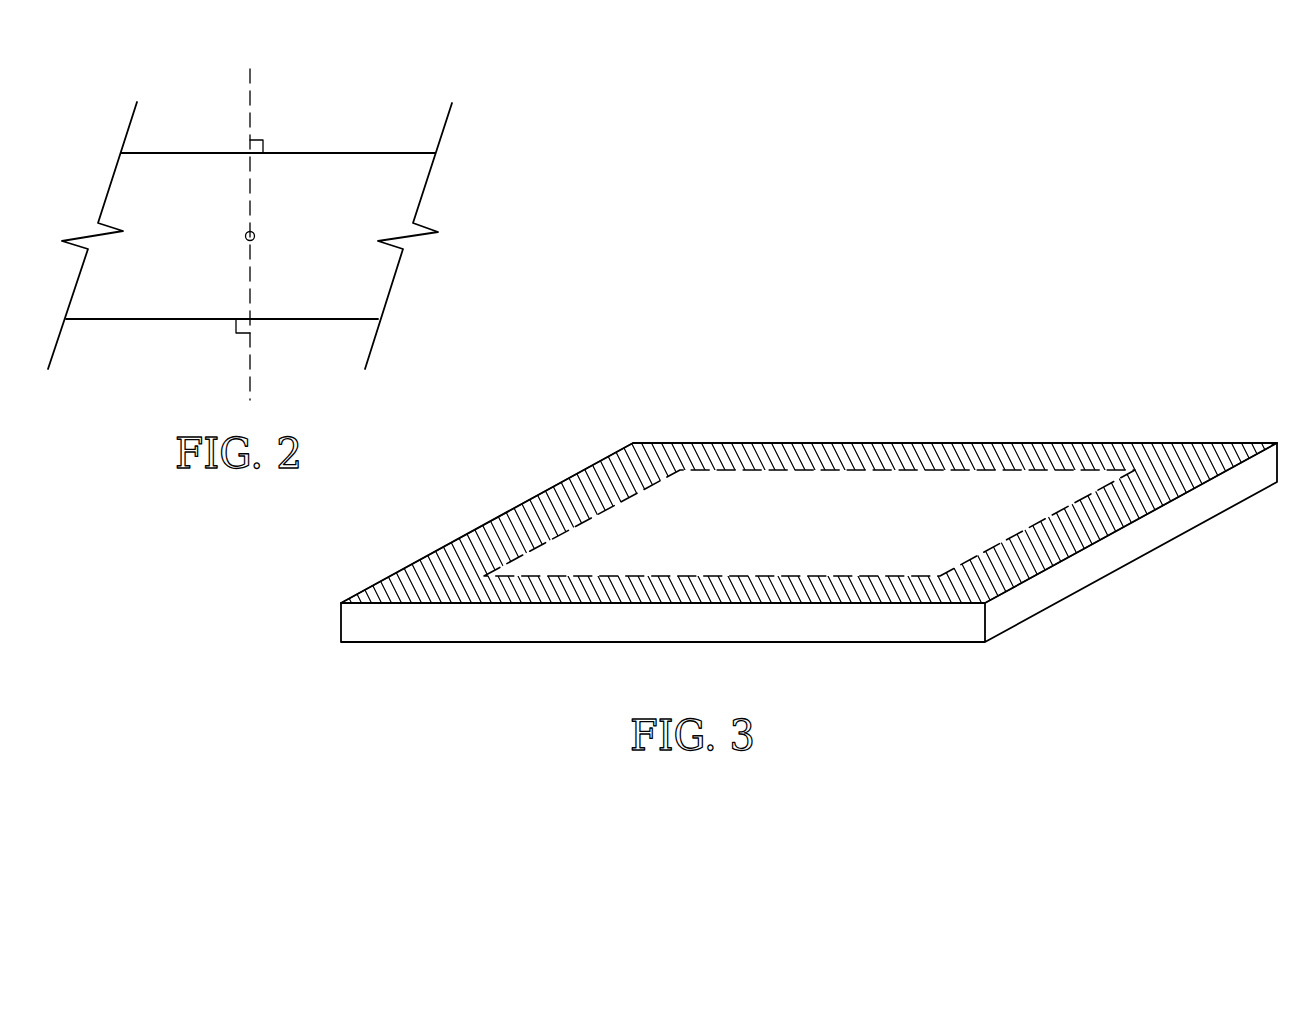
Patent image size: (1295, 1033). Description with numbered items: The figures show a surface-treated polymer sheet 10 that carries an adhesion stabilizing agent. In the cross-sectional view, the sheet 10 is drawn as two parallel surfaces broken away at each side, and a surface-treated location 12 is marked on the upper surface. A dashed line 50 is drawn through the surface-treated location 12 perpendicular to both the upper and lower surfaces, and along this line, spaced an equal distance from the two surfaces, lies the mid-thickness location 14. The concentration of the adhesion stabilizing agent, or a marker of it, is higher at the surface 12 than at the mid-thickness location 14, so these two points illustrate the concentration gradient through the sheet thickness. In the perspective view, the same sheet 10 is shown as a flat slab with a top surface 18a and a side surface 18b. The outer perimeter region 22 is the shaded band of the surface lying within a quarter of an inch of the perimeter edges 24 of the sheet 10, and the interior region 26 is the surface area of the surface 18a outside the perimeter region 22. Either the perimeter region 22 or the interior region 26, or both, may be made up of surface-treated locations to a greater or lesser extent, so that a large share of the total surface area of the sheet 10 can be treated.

In FIG. 2, the treated polymer sheet 10 is at (165, 105).
In FIG. 3, the treated polymer sheet 10 is at (772, 495).
In FIG. 2, the surface-treated location 12 is at (293, 153).
In FIG. 2, the mid-thickness location 14 is at (254, 238).
In FIG. 2, the dashed line 50 is at (253, 97).
In FIG. 3, the surface of the sheet 18a is at (1118, 475).
In FIG. 3, the side surface 18b is at (1175, 541).
In FIG. 3, the outer perimeter region 22 is at (1017, 443).
In FIG. 3, the perimeter edges 24 is at (772, 443).
In FIG. 3, the interior region 26 is at (885, 502).